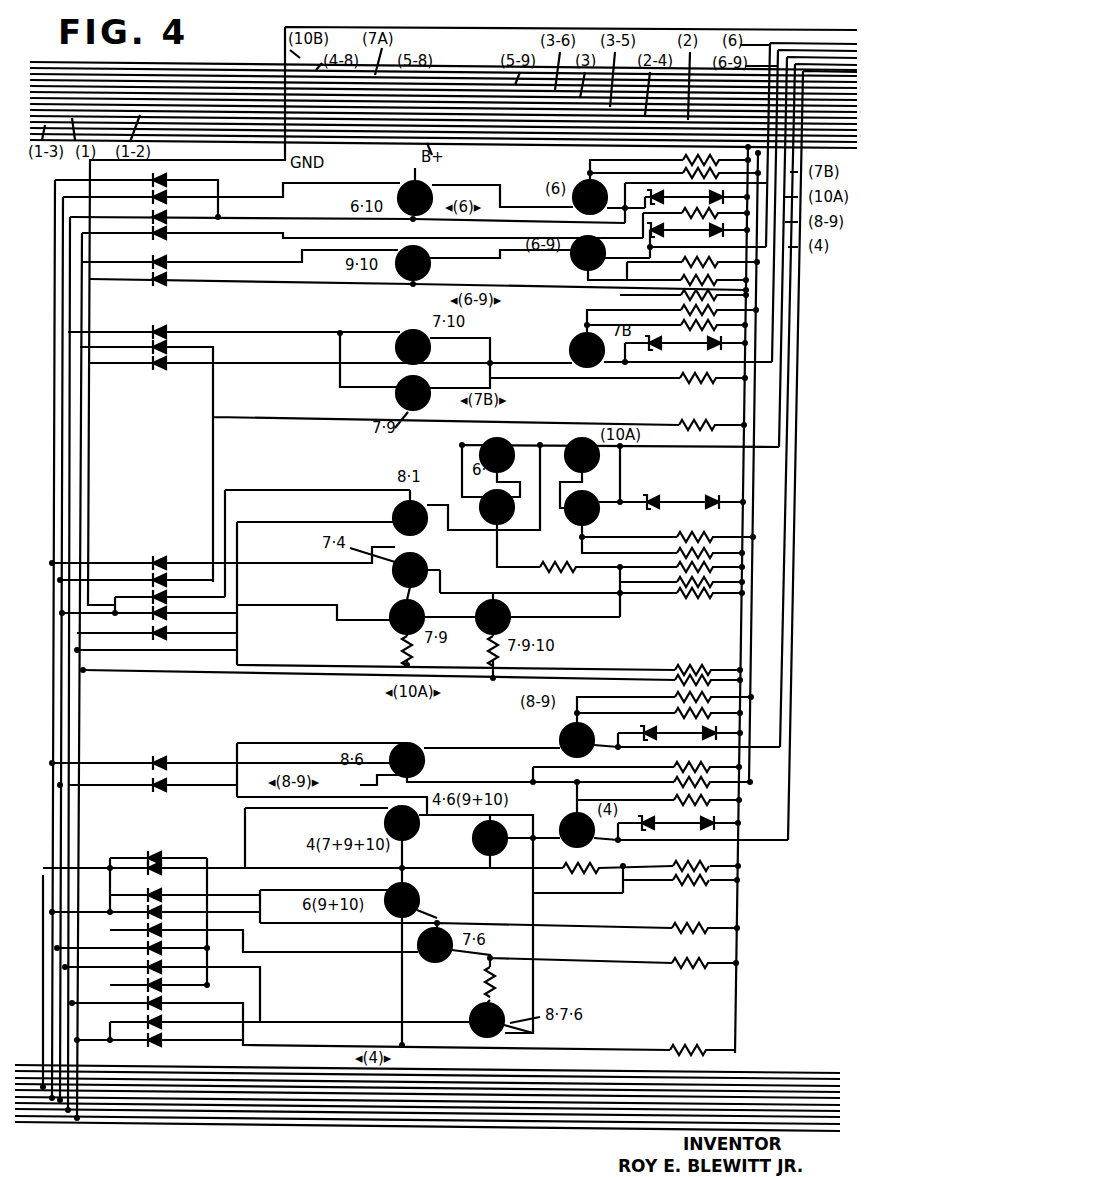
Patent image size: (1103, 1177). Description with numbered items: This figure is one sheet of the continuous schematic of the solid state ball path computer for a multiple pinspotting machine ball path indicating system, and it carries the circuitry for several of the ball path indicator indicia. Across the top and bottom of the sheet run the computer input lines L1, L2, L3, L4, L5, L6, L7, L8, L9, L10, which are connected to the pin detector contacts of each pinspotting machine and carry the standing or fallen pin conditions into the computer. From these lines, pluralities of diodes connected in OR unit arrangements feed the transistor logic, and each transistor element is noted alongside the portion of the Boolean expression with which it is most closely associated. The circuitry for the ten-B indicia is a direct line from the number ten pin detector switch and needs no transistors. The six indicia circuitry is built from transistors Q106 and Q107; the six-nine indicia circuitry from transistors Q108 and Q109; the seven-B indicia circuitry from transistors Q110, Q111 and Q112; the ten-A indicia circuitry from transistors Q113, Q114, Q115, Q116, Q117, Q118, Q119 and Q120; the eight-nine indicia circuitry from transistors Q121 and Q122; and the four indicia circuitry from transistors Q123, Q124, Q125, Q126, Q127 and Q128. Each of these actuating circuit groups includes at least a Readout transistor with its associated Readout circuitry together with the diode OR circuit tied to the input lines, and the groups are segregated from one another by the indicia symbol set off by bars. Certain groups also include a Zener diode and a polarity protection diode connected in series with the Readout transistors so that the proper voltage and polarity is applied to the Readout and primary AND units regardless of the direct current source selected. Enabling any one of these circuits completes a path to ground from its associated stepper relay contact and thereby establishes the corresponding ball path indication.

The transistor Q106 is at (398, 188).
The transistor Q107 is at (571, 188).
The transistor Q108 is at (437, 263).
The transistor Q109 is at (570, 255).
The transistor Q110 is at (397, 340).
The transistor Q111 is at (570, 341).
The transistor Q112 is at (390, 393).
The transistor Q113 is at (478, 447).
The transistor Q114 is at (567, 447).
The transistor Q115 is at (388, 515).
The transistor Q116 is at (483, 510).
The transistor Q117 is at (605, 511).
The transistor Q118 is at (389, 575).
The transistor Q119 is at (387, 617).
The transistor Q120 is at (517, 617).
The transistor Q121 is at (403, 745).
The transistor Q122 is at (556, 736).
The transistor Q123 is at (382, 823).
The transistor Q124 is at (473, 838).
The transistor Q125 is at (561, 819).
The transistor Q126 is at (424, 900).
The transistor Q127 is at (439, 956).
The transistor Q128 is at (464, 1020).
The input line L1 is at (175, 1072).
The input line L2 is at (215, 1078).
The input line L3 is at (252, 1085).
The input line L4 is at (55, 405).
The input line L5 is at (325, 1097).
The input line L6 is at (62, 430).
The input line L7 is at (69, 454).
The input line L8 is at (78, 692).
The input line L9 is at (70, 716).
The input line L10 is at (295, 1140).